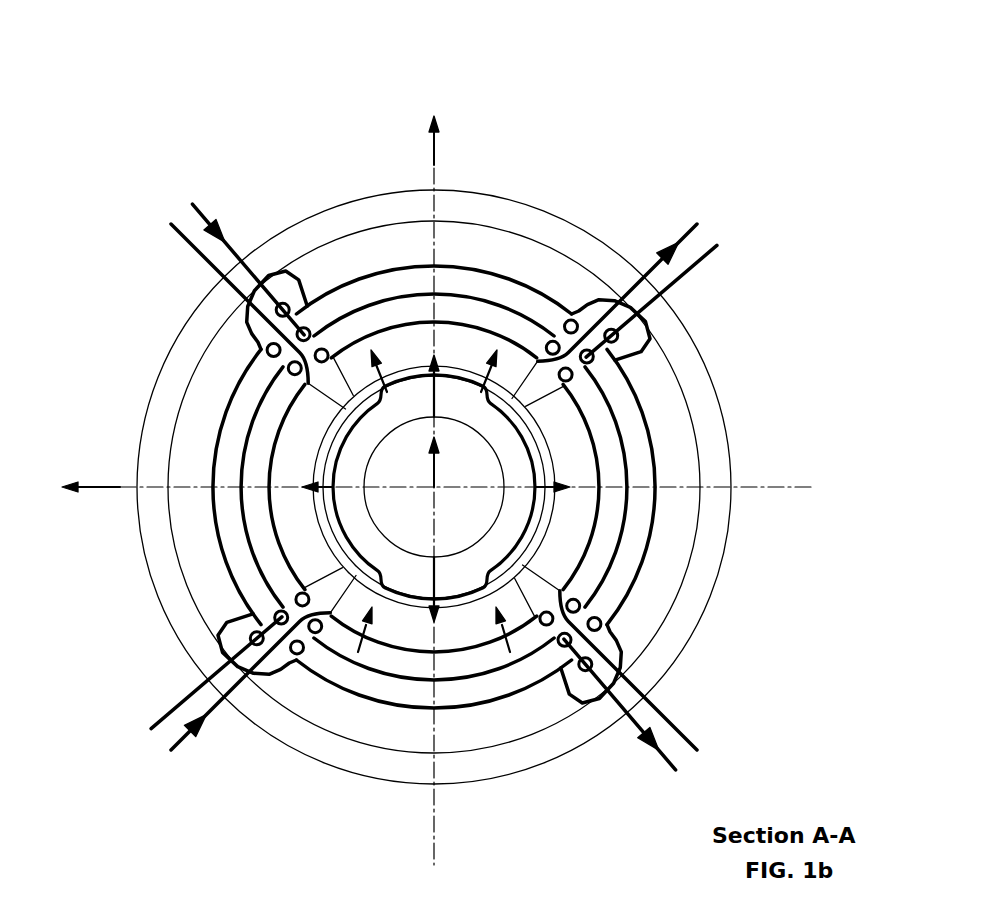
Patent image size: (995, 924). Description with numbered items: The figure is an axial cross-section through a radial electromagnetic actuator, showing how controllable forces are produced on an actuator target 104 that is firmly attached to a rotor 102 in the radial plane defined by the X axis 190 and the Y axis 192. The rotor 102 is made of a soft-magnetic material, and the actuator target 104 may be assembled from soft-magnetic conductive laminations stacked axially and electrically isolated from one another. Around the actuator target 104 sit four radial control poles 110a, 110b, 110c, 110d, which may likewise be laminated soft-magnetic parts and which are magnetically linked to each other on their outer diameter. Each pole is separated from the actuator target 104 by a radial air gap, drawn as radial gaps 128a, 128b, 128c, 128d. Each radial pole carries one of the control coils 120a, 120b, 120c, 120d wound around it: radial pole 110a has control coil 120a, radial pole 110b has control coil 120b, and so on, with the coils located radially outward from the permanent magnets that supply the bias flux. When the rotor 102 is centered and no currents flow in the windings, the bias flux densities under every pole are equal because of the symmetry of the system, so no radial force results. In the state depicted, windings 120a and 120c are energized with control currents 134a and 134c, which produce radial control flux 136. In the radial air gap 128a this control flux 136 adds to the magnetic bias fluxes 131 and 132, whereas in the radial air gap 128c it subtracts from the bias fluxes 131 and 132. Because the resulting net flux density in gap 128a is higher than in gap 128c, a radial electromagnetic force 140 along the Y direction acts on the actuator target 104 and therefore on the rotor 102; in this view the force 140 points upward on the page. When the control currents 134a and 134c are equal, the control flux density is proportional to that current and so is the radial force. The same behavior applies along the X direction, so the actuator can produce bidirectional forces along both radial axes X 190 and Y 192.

The rotor 102 is at (445, 497).
The actuator target 104 is at (544, 233).
The radial control pole 110a is at (475, 290).
The radial control pole 110b is at (620, 395).
The radial control pole 110c is at (415, 695).
The radial control pole 110d is at (243, 402).
The control coil 120a is at (402, 296).
The control coil 120b is at (603, 541).
The control coil 120c is at (492, 672).
The control coil 120d is at (237, 385).
The radial air gap 128a is at (397, 367).
The radial air gap 128b is at (545, 462).
The radial air gap 128c is at (450, 607).
The radial air gap 128d is at (330, 522).
The magnetic bias flux 131 is at (430, 167).
The magnetic bias flux 132 is at (430, 167).
The control current 134a is at (197, 215).
The control current 134c is at (190, 750).
The radial control flux 136 is at (225, 318).
The radial electromagnetic force F_Y 140 is at (333, 450).
The X axis 190 is at (113, 490).
The Y axis 192 is at (434, 166).